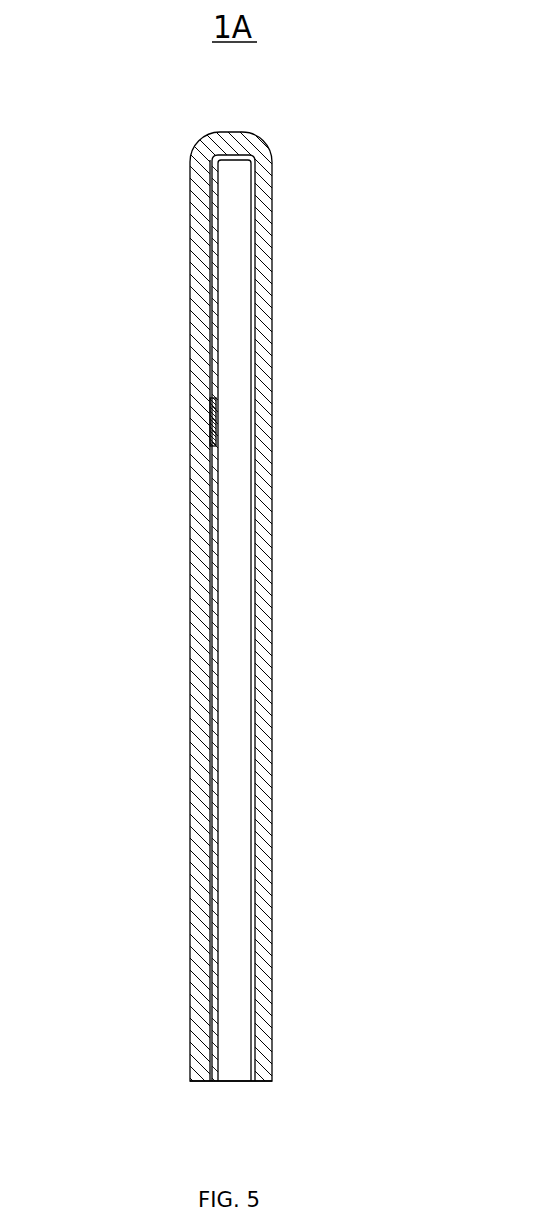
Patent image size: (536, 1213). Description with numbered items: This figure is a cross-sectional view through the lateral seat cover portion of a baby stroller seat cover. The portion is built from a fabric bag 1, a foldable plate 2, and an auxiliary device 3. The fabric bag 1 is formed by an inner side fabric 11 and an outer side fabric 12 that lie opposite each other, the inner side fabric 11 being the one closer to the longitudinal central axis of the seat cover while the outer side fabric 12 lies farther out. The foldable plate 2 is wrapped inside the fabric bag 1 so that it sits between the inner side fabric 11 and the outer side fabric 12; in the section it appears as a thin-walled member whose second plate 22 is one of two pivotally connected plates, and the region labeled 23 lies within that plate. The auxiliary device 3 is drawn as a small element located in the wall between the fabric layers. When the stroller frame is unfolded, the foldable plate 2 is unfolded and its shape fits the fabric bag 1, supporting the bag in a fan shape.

The fabric bag 1 is at (307, 606).
The inner side fabric 11 is at (272, 613).
The outer side fabric 12 is at (195, 588).
The foldable plate 2 is at (230, 611).
The second plate 22 is at (252, 227).
The tube cavity 23 is at (235, 317).
The auxiliary device 3 is at (210, 422).